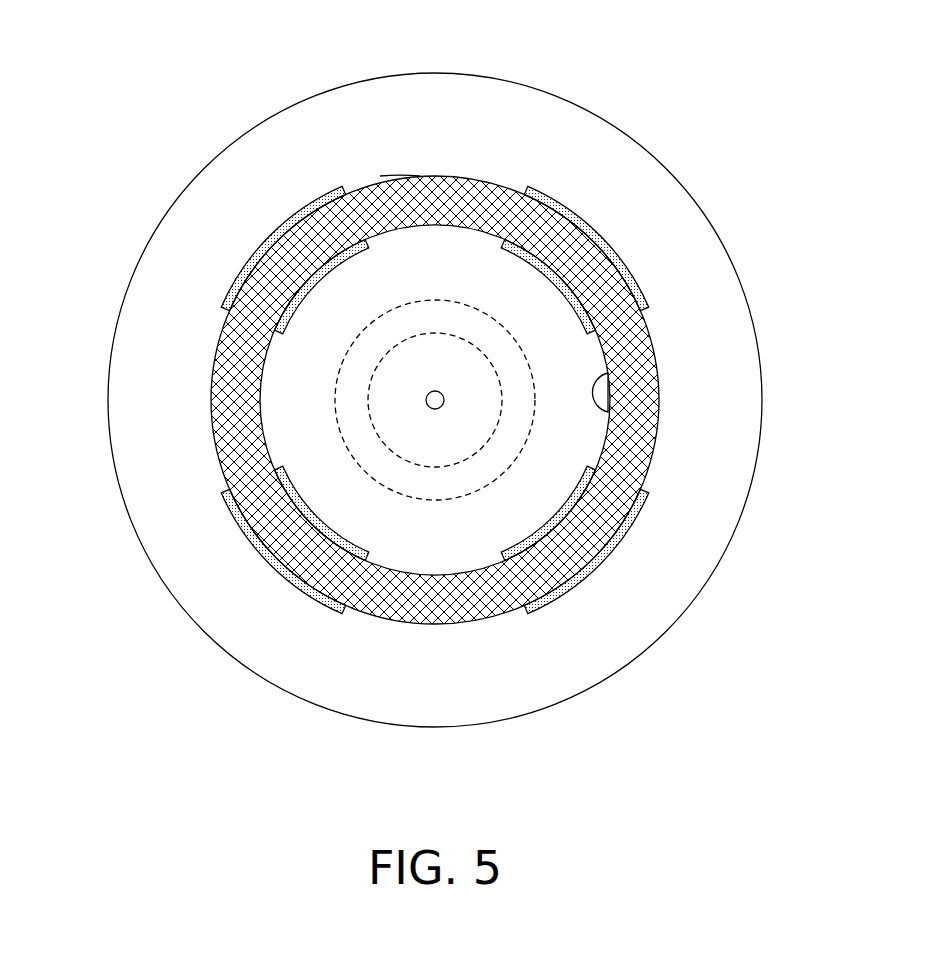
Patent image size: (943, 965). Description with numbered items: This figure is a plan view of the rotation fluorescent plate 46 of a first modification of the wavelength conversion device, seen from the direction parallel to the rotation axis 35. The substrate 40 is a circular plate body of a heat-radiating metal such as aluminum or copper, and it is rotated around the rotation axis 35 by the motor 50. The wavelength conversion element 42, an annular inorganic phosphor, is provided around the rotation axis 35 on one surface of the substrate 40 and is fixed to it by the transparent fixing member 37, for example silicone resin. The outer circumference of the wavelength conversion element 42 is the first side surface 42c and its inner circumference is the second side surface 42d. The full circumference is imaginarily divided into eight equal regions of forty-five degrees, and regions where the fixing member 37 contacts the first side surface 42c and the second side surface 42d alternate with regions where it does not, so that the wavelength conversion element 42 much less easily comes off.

The rotation axis 35 is at (441, 408).
The fixing member 37 is at (327, 262).
The substrate 40 is at (540, 113).
The wavelength conversion element 42 is at (230, 413).
The first side surface 42c is at (394, 177).
The second side surface 42d is at (608, 413).
The rotation fluorescent plate 46 is at (657, 133).
The motor 50 is at (418, 500).